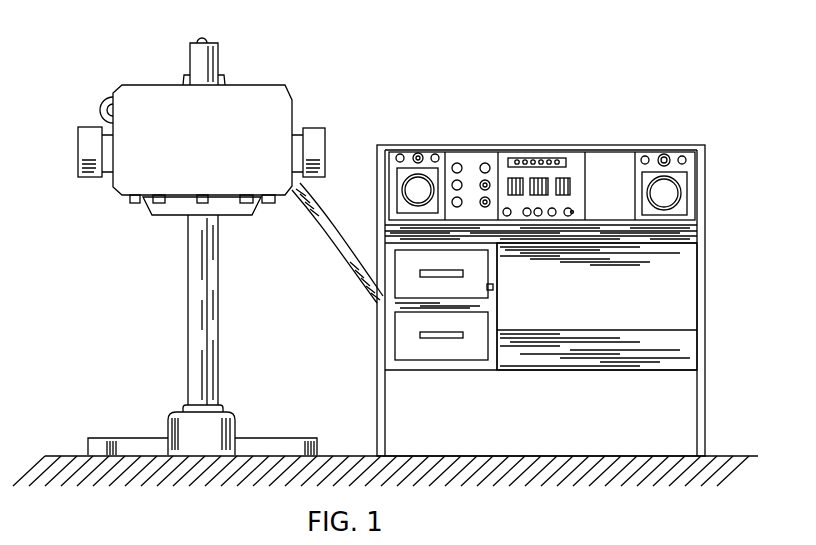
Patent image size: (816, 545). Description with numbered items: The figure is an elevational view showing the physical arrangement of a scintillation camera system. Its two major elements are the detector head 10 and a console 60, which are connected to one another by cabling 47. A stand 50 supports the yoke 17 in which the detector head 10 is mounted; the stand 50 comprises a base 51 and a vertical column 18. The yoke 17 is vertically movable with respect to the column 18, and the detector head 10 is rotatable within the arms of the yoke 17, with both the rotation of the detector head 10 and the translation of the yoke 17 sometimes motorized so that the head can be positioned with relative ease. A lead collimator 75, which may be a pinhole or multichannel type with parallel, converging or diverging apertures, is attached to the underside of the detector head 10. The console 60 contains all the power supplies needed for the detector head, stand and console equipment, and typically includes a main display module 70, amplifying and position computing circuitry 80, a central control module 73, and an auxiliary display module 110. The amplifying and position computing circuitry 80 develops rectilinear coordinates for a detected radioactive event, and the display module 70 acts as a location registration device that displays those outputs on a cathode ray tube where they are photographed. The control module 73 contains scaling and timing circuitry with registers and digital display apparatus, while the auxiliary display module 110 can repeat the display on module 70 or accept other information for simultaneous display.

The detector head 10 is at (260, 60).
The yoke 17 is at (88, 127).
The vertical column 18 is at (210, 372).
The cabling 47 is at (343, 271).
The stand 50 is at (206, 313).
The base 51 is at (187, 425).
The console 60 is at (597, 306).
The main display module 70 is at (418, 190).
The central control module 73 is at (528, 180).
The lead collimator 75 is at (240, 216).
The amplifying and position computing circuitry 80 is at (467, 182).
The auxiliary display module 110 is at (667, 190).